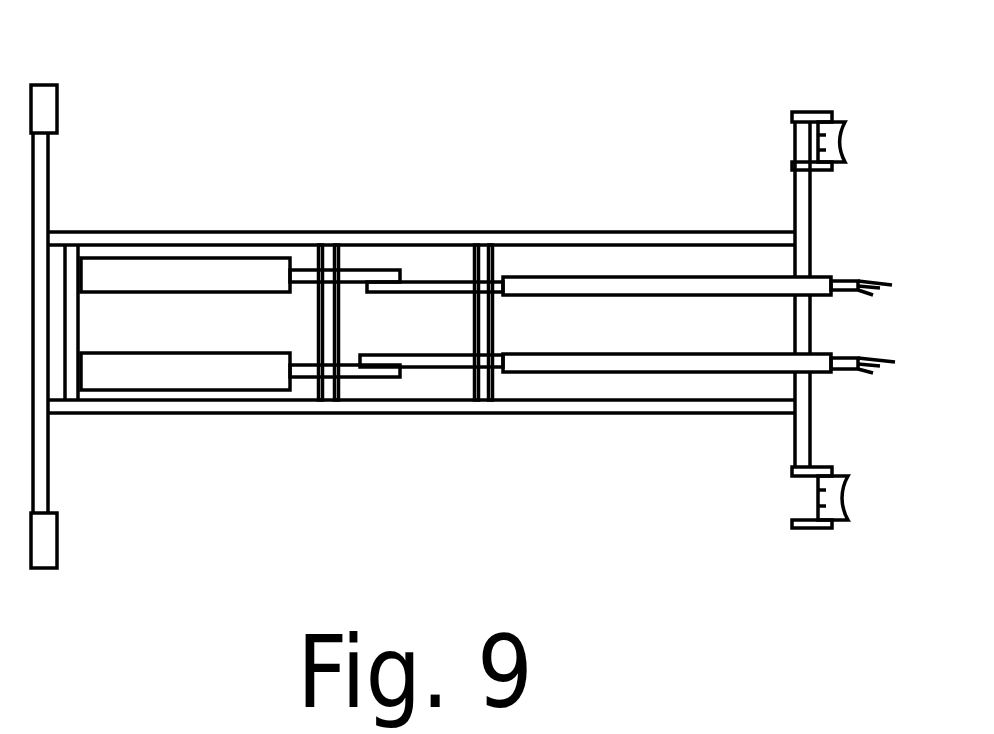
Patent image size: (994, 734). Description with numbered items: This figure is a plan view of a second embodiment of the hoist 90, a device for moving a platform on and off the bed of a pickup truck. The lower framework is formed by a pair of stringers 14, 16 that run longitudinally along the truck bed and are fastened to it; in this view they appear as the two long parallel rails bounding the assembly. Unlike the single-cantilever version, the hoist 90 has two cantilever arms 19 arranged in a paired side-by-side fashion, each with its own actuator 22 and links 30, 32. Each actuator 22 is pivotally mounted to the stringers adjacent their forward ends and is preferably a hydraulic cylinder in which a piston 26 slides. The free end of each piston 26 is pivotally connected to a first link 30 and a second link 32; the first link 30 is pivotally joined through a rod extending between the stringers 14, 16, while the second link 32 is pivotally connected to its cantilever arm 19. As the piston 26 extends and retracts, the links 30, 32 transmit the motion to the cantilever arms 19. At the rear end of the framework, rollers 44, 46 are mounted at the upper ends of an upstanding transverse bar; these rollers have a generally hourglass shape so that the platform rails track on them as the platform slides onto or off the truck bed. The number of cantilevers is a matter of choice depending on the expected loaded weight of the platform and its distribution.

The hoist 90 is at (235, 104).
The stringer 14 is at (268, 232).
The stringer 16 is at (258, 414).
The actuator 22 is at (167, 258).
The piston 26 is at (360, 307).
The first link 30 is at (360, 307).
The second link 32 is at (443, 280).
The cantilever arm 19 is at (644, 283).
The roller 44 is at (845, 130).
The roller 46 is at (845, 500).